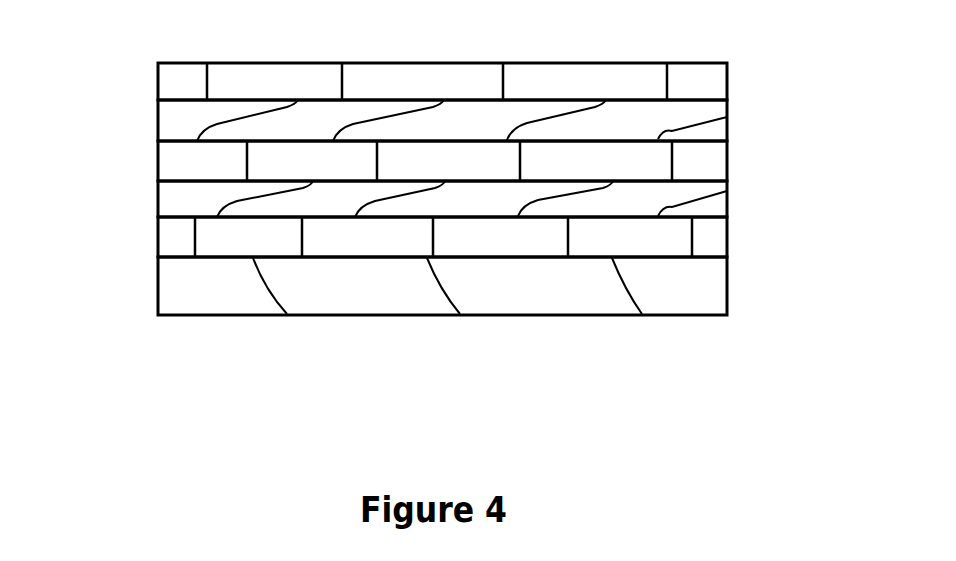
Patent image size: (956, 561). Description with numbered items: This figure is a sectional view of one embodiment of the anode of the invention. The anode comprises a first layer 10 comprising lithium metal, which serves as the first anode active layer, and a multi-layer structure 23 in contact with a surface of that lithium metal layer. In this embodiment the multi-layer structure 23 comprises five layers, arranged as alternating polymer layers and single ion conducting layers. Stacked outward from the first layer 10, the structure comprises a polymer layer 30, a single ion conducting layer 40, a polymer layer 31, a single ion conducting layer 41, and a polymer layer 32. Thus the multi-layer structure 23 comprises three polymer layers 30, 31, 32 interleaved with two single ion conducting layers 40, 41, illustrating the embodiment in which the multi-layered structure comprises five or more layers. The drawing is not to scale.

The multi-layer structure 23 is at (157, 65).
The polymer layer 32 is at (728, 67).
The single ion conducting layer 41 is at (728, 108).
The polymer layer 31 is at (728, 158).
The single ion conducting layer 40 is at (728, 195).
The polymer layer 30 is at (728, 233).
The first layer 10 is at (728, 283).